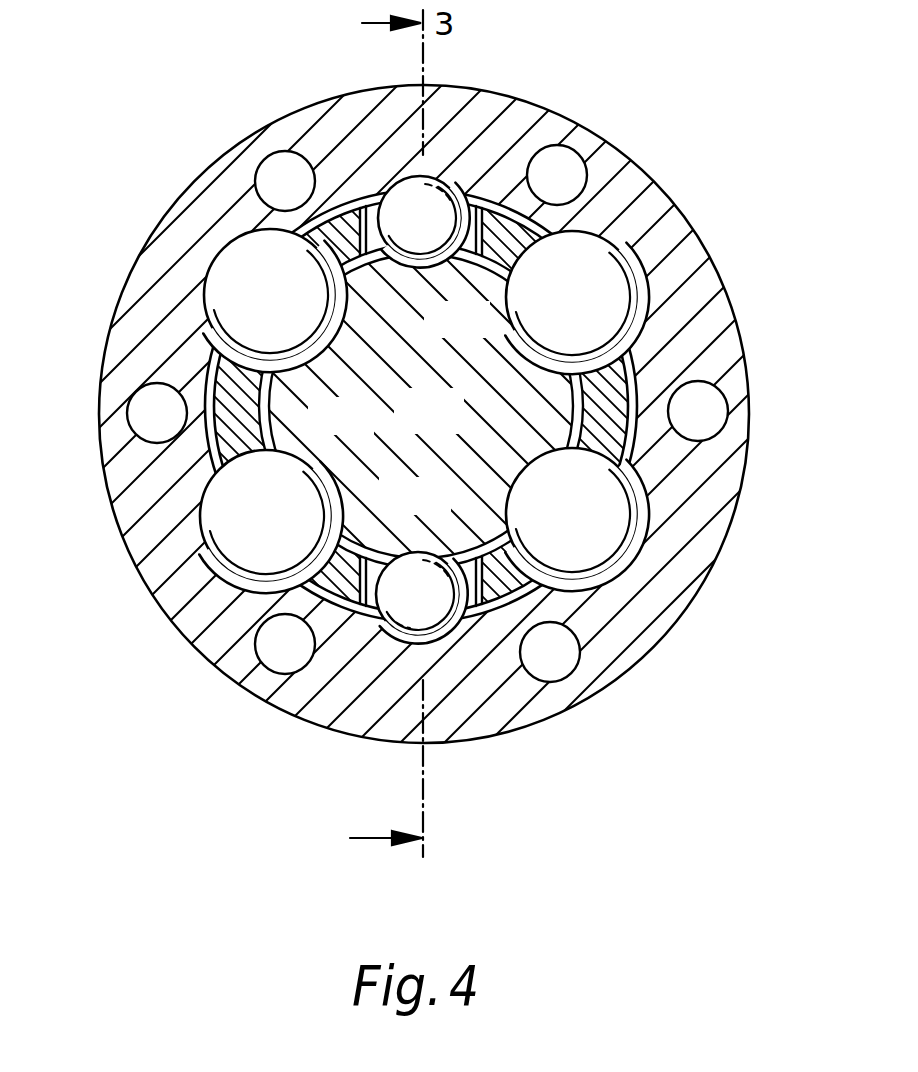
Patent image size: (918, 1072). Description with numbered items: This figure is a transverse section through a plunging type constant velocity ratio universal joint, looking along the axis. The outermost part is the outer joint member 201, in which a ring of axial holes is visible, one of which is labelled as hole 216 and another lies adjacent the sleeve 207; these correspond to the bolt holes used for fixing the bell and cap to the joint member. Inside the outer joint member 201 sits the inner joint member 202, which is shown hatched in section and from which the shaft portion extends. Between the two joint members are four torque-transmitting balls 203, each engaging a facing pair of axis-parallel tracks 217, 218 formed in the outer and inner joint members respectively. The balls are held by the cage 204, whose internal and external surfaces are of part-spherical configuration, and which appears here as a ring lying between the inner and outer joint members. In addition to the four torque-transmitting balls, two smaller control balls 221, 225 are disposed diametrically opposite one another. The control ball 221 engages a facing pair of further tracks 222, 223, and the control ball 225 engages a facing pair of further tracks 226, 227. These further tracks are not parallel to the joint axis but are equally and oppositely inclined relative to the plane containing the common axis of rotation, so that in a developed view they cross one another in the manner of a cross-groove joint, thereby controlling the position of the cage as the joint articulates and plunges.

The outer joint member 201 is at (612, 187).
The inner joint member 202 is at (458, 429).
The torque-transmitting balls 203 is at (603, 290).
The cage 204 is at (622, 383).
The sleeve 207 is at (537, 625).
The bore 216 is at (143, 403).
The axis-parallel track 217 is at (247, 232).
The axis-parallel track 218 is at (318, 370).
The control member ball 221 is at (445, 195).
The further track 222 is at (466, 268).
The further track 223 is at (386, 197).
The control member ball 225 is at (399, 655).
The further track 226 is at (399, 632).
The further track 227 is at (479, 655).